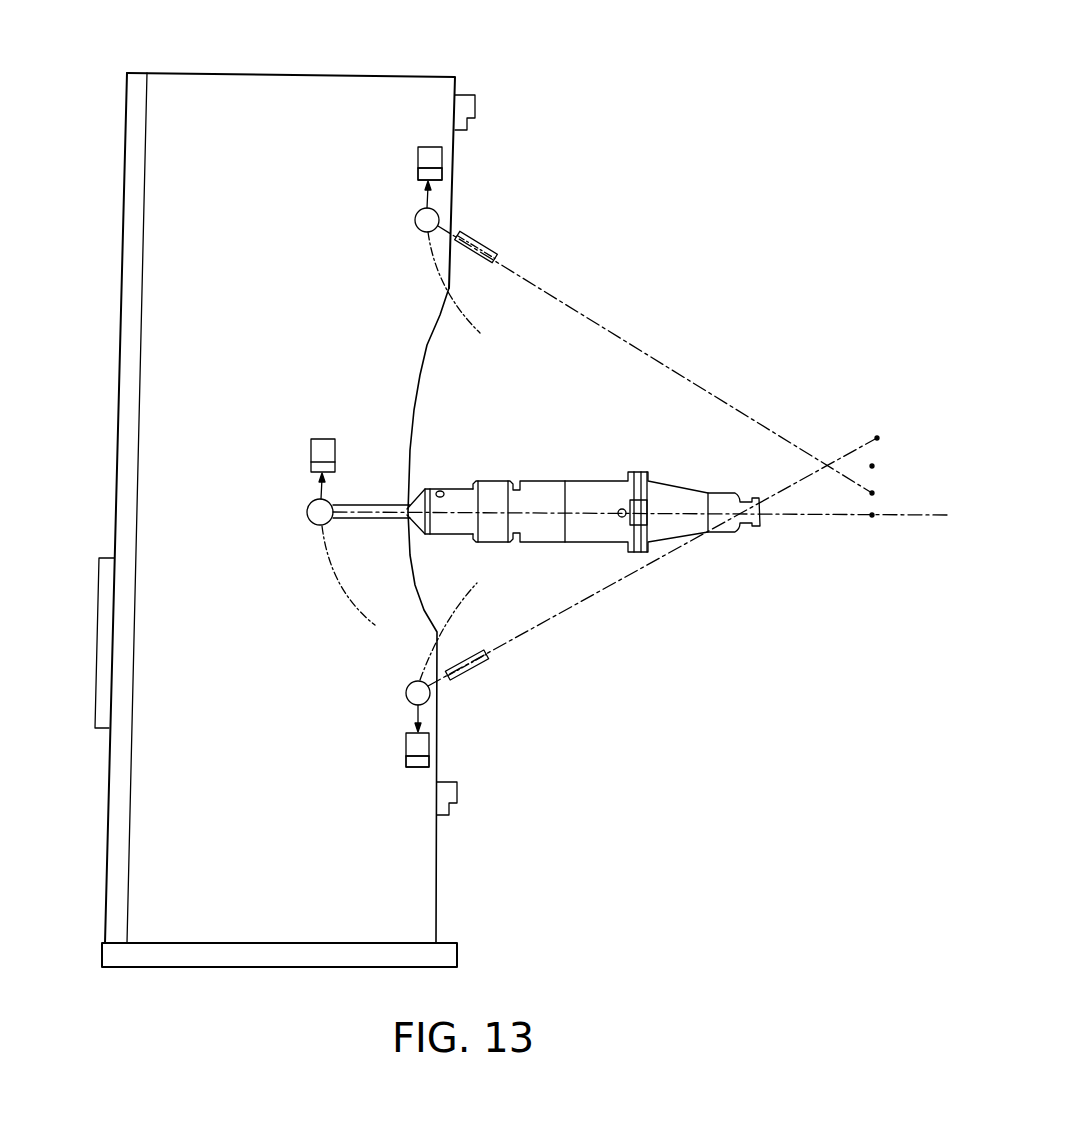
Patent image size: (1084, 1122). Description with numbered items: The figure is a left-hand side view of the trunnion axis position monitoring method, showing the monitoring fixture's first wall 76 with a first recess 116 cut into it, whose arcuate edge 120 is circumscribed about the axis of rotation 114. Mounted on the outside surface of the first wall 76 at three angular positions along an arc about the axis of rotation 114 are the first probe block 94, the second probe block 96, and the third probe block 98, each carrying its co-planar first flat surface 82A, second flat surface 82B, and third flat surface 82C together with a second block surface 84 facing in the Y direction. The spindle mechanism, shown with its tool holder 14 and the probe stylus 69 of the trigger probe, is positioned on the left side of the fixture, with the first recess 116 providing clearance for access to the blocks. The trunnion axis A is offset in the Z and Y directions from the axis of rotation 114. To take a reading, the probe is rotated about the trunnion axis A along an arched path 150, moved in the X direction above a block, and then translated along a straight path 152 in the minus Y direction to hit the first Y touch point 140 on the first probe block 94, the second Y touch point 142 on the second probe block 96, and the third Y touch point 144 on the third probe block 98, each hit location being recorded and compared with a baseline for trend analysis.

The tool holder 14 is at (598, 484).
The probe stylus 69 is at (366, 522).
The first wall 76 is at (245, 76).
The first flat surface 82A is at (406, 748).
The second flat surface 82B is at (311, 441).
The third flat surface 82C is at (418, 154).
The second block surface 84 is at (418, 174).
The first probe block 94 is at (406, 763).
The second probe block 96 is at (335, 440).
The third probe block 98 is at (453, 170).
The axis of rotation 114 is at (874, 466).
The first recess 116 is at (416, 556).
The arcuate edge 120 is at (416, 396).
The first Y touch point 140 is at (387, 706).
The second Y touch point 142 is at (295, 499).
The third Y touch point 144 is at (399, 208).
The arched path 150 is at (434, 264).
The straight path 152 is at (432, 207).
The trunnion axis A is at (877, 437).